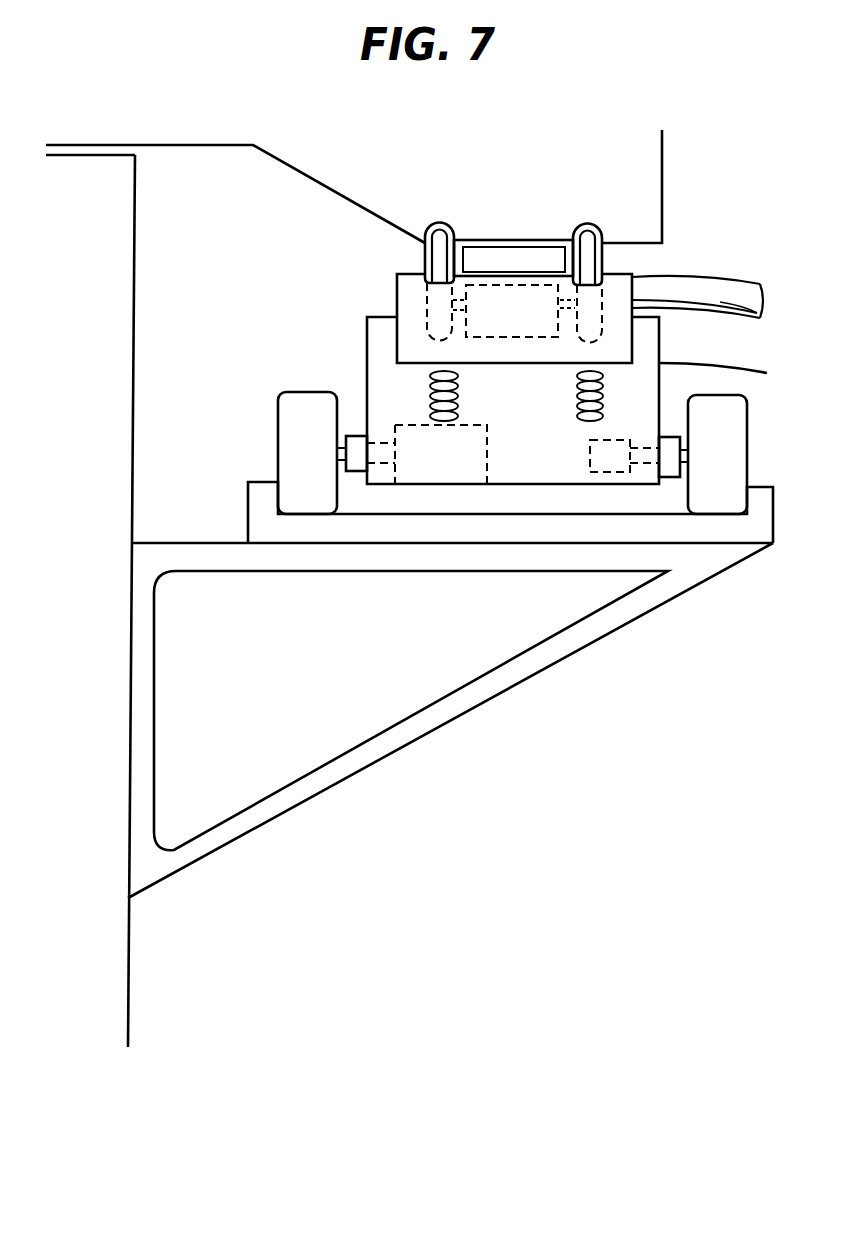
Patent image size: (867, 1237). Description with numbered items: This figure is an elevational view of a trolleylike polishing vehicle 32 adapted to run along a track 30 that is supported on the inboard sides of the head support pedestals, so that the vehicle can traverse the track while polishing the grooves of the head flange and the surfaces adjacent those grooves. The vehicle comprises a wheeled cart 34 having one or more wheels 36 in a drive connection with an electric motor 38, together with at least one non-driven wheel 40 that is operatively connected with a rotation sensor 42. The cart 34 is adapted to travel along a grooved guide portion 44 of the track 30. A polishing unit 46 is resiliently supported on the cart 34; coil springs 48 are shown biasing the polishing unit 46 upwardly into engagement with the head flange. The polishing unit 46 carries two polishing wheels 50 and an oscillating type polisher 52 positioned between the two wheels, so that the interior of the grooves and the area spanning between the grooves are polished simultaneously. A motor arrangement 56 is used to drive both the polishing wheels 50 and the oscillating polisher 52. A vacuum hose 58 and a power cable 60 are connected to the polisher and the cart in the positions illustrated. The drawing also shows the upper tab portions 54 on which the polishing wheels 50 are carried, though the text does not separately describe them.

The track 30 is at (634, 641).
The polishing vehicle 32 is at (305, 370).
The wheeled cart 34 is at (382, 423).
The wheel 36 is at (292, 458).
The electric motor 38 is at (407, 457).
The non-driven wheel 40 is at (730, 457).
The rotation sensor 42 is at (613, 458).
The grooved guide portion 44 is at (258, 513).
The polishing unit 46 is at (408, 318).
The coil springs 48 is at (430, 402).
The polishing wheels 50 is at (438, 258).
The oscillating type polisher 52 is at (515, 258).
The tab 54 is at (441, 223).
The motor arrangement 56 is at (482, 313).
The vacuum hose 58 is at (683, 290).
The power cable 60 is at (753, 371).